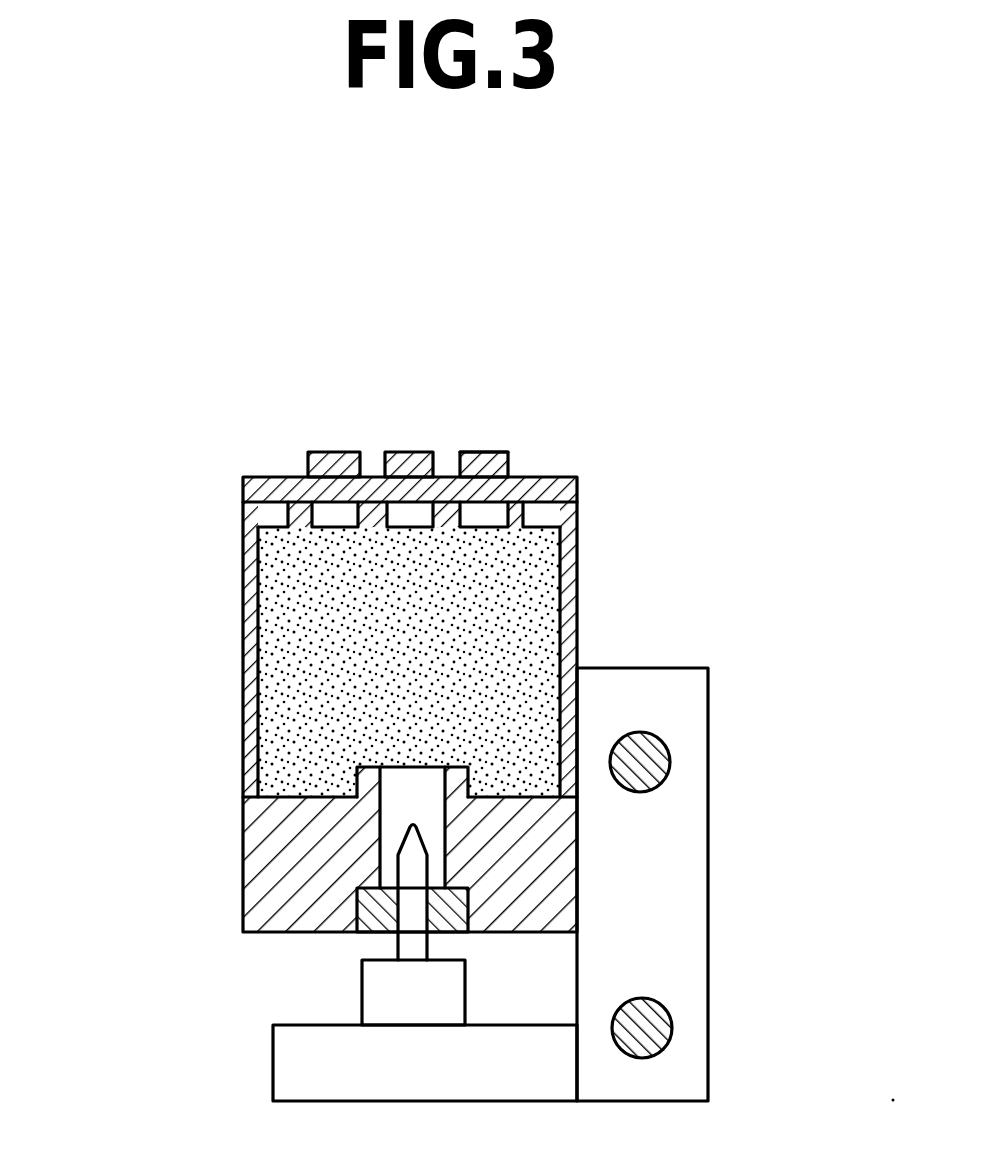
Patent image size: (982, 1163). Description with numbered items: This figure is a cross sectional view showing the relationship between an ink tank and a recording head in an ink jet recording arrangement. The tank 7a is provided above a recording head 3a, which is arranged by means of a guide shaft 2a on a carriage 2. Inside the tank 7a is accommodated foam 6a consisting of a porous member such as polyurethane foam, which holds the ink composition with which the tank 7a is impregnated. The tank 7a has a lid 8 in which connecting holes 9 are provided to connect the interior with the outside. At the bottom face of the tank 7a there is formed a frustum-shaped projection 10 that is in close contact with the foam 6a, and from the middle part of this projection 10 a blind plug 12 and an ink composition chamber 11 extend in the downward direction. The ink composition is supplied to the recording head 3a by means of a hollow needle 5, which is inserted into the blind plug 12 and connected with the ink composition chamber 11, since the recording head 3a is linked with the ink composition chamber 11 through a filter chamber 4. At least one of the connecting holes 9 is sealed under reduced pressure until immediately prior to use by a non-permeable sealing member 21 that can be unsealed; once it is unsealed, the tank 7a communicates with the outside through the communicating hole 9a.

The carriage 2 is at (650, 875).
The guide shaft 2a is at (670, 750).
The recording head 3a is at (325, 1063).
The filter chamber 4 is at (392, 992).
The hollow needle 5 is at (406, 937).
The foam 6a is at (515, 590).
The tank 7a is at (247, 583).
The lid 8 is at (577, 478).
The connecting holes 9 is at (320, 452).
The communicating hole 9a is at (478, 452).
The frustum-shaped projection 10 is at (340, 782).
The ink composition chamber 11 is at (393, 814).
The blind plug 12 is at (375, 915).
The non-permeable sealing member 21 is at (503, 447).